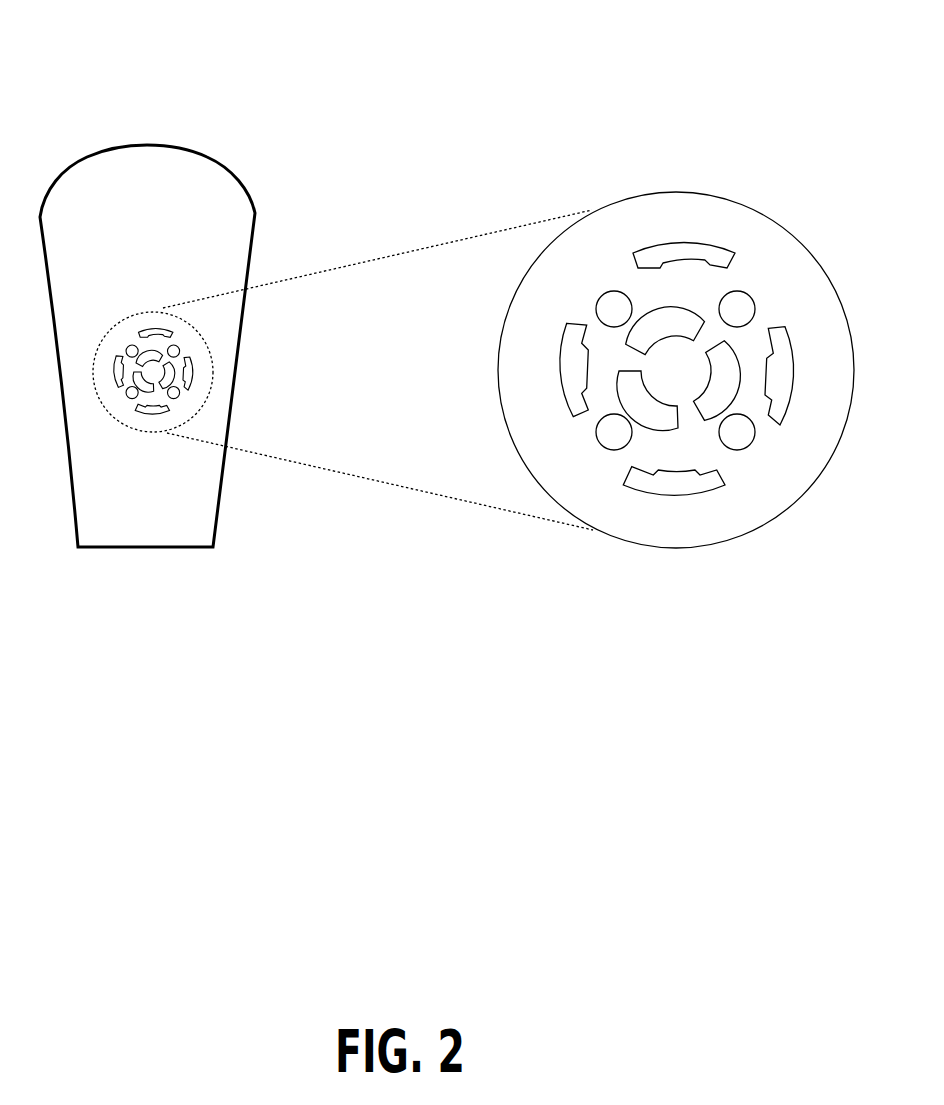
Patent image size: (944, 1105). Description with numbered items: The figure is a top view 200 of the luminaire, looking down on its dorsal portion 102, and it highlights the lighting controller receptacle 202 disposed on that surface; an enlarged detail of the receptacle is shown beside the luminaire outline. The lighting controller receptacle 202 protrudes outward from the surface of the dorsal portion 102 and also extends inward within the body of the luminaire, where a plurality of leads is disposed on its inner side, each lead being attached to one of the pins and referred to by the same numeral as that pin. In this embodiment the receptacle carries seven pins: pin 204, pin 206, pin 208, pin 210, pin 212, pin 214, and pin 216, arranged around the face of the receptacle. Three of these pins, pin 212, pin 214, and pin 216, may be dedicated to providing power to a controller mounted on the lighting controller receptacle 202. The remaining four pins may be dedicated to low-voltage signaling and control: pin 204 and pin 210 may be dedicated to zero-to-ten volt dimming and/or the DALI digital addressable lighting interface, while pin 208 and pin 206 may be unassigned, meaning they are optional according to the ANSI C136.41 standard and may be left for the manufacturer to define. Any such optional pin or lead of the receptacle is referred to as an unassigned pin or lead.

The dorsal portion 102 is at (145, 180).
The top view 200 is at (682, 81).
The lighting controller receptacle 202 is at (212, 378).
The pin 204 is at (697, 503).
The pin 206 is at (703, 262).
The pin 208 is at (567, 368).
The pin 210 is at (780, 392).
The pin 212 is at (653, 318).
The pin 214 is at (650, 412).
The pin 216 is at (745, 395).